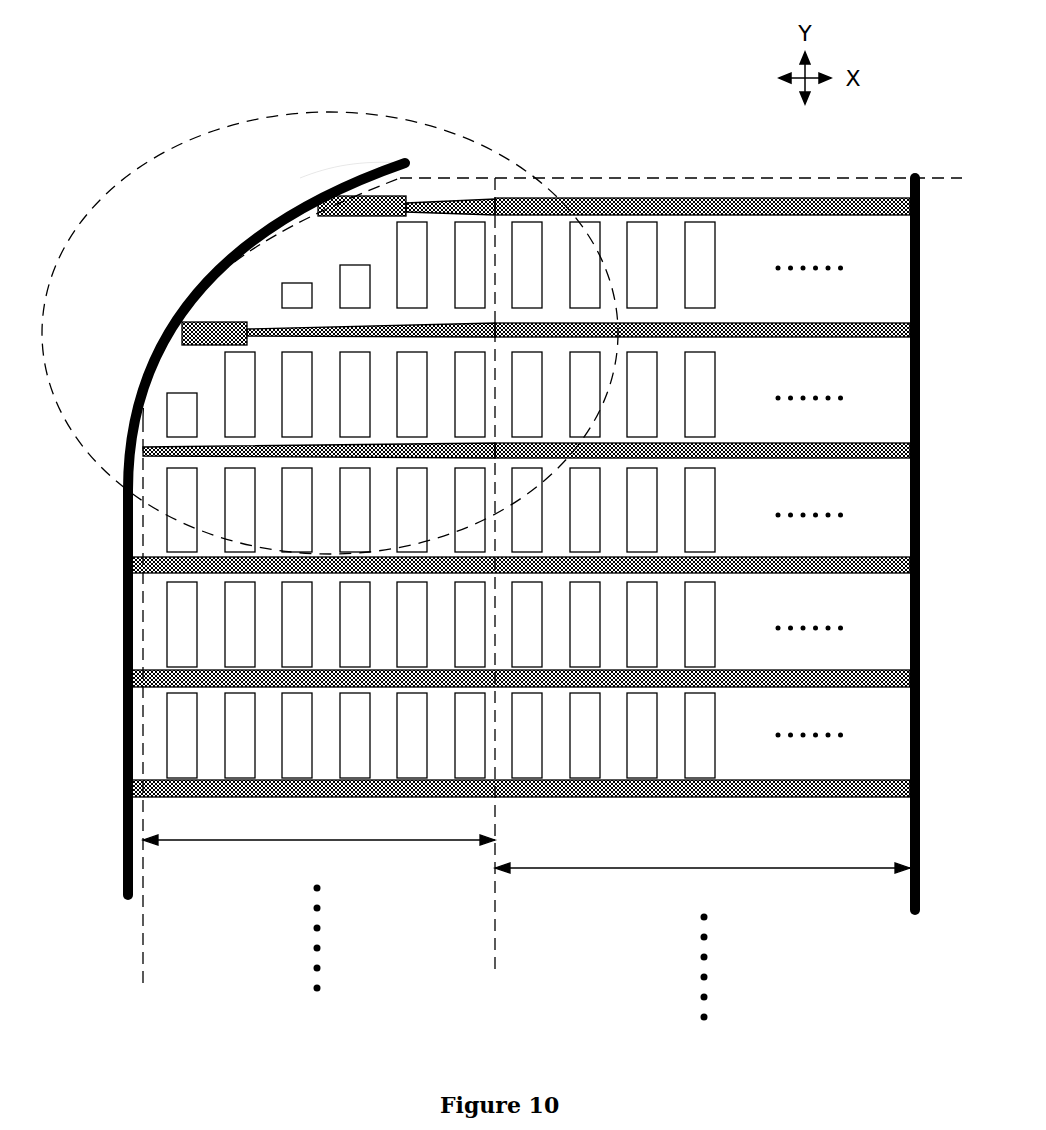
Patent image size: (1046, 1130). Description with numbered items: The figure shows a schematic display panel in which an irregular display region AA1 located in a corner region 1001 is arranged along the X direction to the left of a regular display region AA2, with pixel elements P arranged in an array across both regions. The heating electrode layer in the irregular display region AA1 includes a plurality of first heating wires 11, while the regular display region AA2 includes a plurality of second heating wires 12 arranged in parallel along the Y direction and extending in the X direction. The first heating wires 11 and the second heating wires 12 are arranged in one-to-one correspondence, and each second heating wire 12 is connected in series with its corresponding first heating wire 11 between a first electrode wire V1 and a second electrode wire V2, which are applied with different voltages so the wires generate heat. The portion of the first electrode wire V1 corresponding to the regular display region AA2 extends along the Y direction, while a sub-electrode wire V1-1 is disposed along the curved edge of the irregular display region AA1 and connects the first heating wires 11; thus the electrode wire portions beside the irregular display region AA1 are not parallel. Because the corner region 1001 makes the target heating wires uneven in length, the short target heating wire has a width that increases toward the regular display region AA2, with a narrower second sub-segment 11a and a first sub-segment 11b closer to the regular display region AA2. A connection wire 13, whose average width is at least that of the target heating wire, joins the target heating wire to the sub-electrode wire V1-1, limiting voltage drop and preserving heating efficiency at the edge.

The first heating wire 11 is at (366, 230).
The second sub-segment 11a is at (417, 200).
The first sub-segment 11b is at (470, 200).
The second heating wire 12 is at (810, 215).
The connection wire 13 is at (330, 185).
The corner region 1001 is at (170, 155).
The pixel element P is at (168, 645).
The first electrode wire V1 is at (121, 713).
The sub-electrode wire V1-1 is at (225, 268).
The second electrode wire V2 is at (922, 566).
The irregular display region AA1 is at (319, 828).
The regular display region AA2 is at (702, 856).